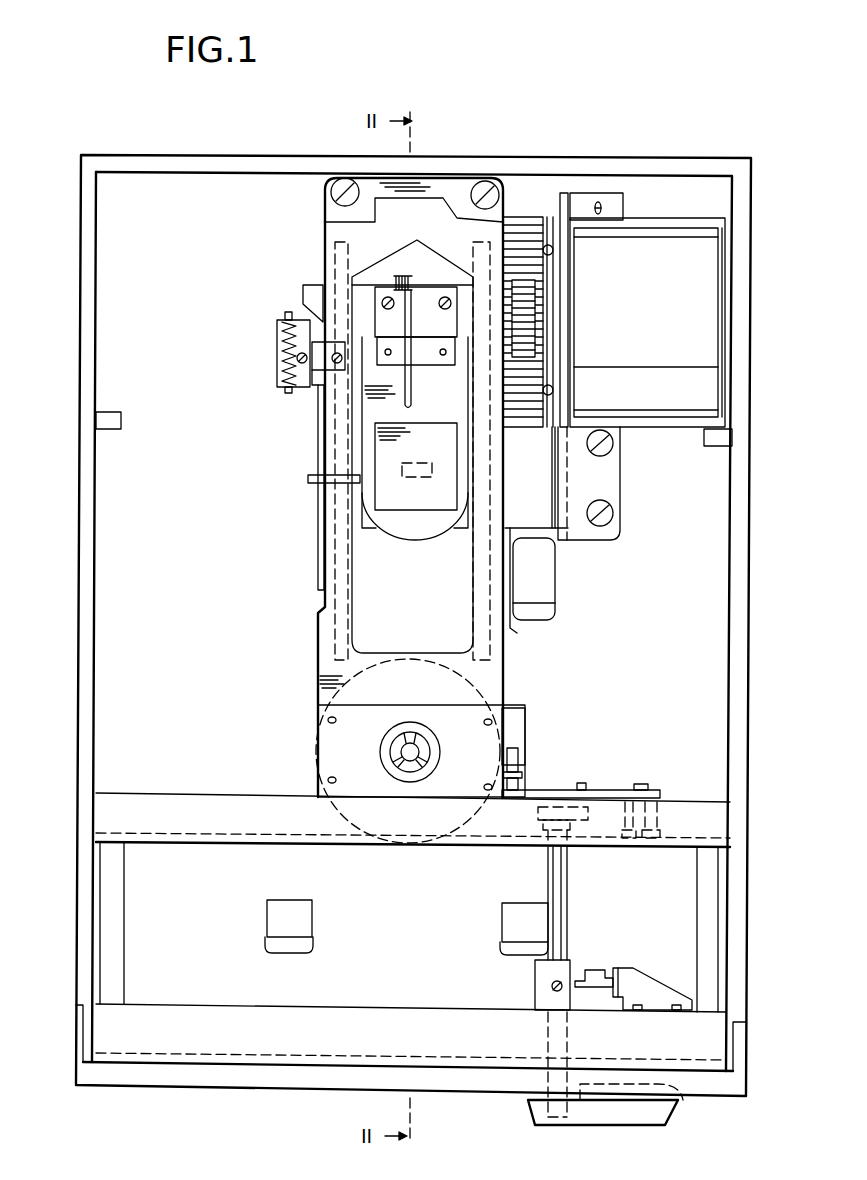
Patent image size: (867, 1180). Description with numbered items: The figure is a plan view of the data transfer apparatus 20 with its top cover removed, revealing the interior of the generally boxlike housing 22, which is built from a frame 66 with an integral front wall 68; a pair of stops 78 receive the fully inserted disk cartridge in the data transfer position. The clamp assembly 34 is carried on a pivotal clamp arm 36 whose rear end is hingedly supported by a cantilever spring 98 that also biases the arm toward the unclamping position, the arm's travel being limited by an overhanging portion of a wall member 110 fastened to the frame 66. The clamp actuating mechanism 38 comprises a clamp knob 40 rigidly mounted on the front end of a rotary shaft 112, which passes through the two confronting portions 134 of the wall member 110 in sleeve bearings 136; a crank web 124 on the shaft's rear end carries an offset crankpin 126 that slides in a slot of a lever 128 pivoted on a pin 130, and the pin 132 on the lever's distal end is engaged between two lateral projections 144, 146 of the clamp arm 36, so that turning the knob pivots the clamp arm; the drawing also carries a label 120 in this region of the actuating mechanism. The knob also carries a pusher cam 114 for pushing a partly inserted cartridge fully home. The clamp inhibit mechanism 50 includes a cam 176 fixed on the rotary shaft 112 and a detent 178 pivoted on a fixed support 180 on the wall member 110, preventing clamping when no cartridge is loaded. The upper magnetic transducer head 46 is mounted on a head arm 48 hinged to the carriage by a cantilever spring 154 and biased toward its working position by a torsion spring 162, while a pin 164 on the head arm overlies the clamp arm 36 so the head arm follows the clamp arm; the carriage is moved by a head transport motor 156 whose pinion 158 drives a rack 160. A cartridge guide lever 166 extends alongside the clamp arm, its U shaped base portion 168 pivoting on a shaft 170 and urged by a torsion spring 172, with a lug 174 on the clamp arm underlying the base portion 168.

The data transfer apparatus 20 is at (128, 146).
The housing 22 is at (78, 200).
The frame 66 is at (94, 268).
The front wall 68 is at (170, 1080).
The stops 78 is at (114, 430).
The cantilever spring 98 is at (440, 178).
The rack 160 is at (521, 240).
The cantilever spring 154 is at (428, 330).
The head transport motor 156 is at (706, 298).
The pinion 158 is at (528, 303).
The U shaped base portion 168 is at (312, 312).
The shaft 170 is at (284, 316).
The torsion spring 172 is at (280, 338).
The lug 174 is at (312, 390).
The torsion spring 162 is at (414, 393).
The pin 164 is at (312, 484).
The cartridge guide lever 166 is at (317, 537).
The upper magnetic transducer head 46 is at (420, 477).
The head arm 48 is at (412, 538).
The clamp arm 36 is at (306, 684).
The clamp assembly 34 is at (318, 736).
The lateral projection 146 is at (526, 725).
The pin 132 is at (519, 756).
The lateral projection 144 is at (522, 774).
The crankpin 126 is at (581, 783).
The lever 128 is at (612, 790).
The pin 130 is at (646, 784).
The wall member 110 is at (190, 800).
The crank web 124 is at (538, 812).
The confronting portions 134 is at (208, 848).
The drive rod assembly 120 is at (538, 858).
The sleeve bearings 136 is at (572, 848).
The clamp actuating mechanism 38 is at (538, 886).
The rotary shaft 112 is at (568, 900).
The clamp inhibit mechanism 50 is at (522, 970).
The detent 178 is at (598, 969).
The fixed support 180 is at (655, 984).
The cam 176 is at (534, 998).
The pusher cam 114 is at (680, 1098).
The clamp knob 40 is at (648, 1118).